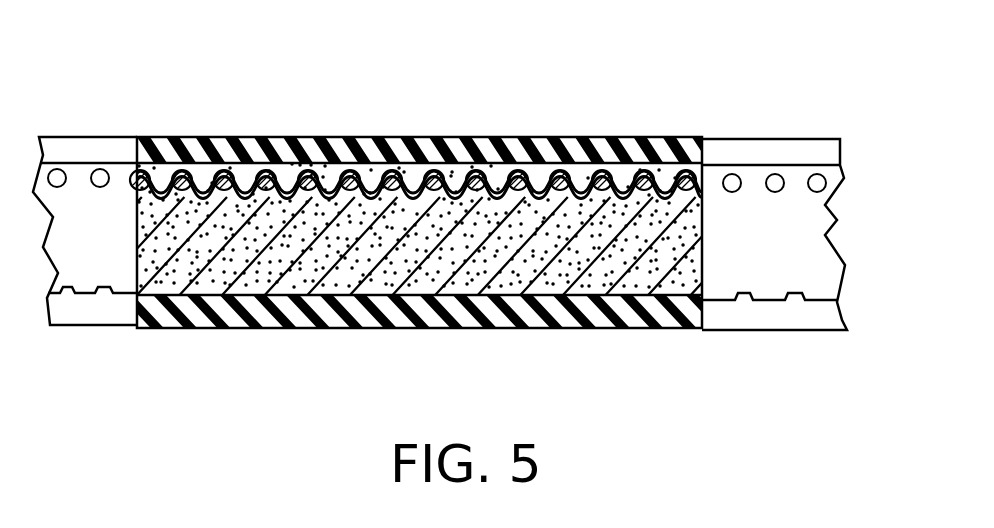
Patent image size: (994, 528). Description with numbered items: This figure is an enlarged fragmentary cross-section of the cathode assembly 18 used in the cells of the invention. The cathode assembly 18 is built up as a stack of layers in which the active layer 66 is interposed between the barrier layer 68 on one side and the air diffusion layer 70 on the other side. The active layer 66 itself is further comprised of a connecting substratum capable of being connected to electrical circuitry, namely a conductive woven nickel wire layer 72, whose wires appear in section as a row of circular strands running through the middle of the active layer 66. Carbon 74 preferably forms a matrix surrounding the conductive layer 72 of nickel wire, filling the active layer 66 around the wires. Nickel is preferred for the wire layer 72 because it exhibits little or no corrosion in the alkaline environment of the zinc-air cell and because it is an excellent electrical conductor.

The cathode assembly 18 is at (195, 125).
The active layer 66 is at (855, 165).
The barrier layer 68 is at (688, 138).
The air diffusion layer 70 is at (585, 328).
The conductive woven nickel wire layer 72 is at (446, 168).
The carbon 74 is at (171, 280).